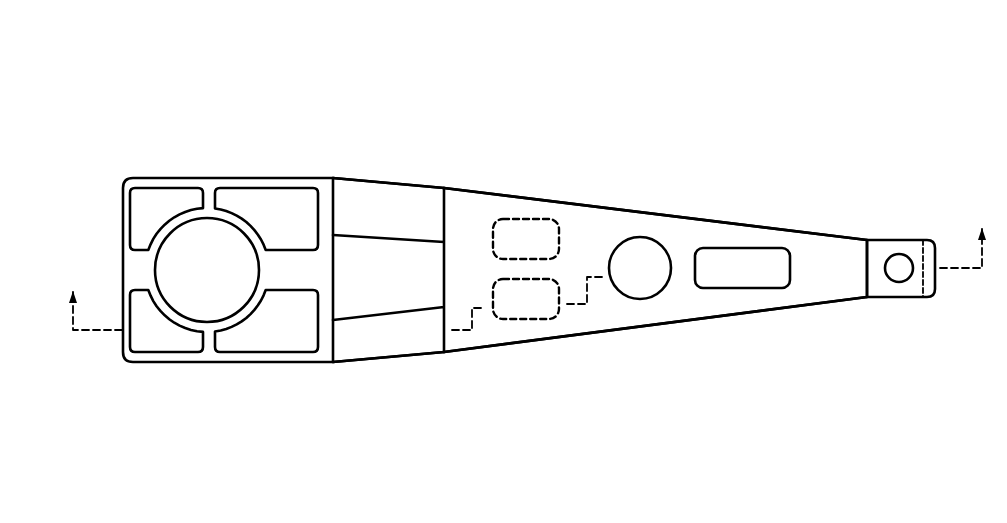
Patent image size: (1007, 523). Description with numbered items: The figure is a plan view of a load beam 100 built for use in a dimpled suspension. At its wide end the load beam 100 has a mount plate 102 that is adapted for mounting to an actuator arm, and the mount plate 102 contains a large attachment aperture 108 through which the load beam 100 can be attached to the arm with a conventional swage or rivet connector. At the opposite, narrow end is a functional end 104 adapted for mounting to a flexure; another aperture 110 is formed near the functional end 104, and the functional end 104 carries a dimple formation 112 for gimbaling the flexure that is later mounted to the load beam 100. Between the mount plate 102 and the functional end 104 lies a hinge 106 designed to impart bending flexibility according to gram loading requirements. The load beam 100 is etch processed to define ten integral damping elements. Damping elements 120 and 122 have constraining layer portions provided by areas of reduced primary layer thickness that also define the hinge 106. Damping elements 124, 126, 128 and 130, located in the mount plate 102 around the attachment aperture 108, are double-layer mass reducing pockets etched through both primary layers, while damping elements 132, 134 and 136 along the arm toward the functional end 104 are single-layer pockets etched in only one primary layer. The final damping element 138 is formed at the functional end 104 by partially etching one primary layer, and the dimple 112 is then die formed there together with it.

The load beam 100 is at (103, 72).
The mount plate 102 is at (210, 255).
The functional end 104 is at (717, 264).
The hinge 106 is at (375, 249).
The attachment aperture 108 is at (172, 237).
The aperture 110 is at (647, 286).
The dimple formation 112 is at (897, 272).
The integral damping element 120 is at (405, 190).
The integral damping element 122 is at (405, 350).
The integral damping element 124 is at (155, 196).
The integral damping element 126 is at (155, 345).
The integral damping element 128 is at (263, 190).
The integral damping element 130 is at (263, 347).
The integral damping element 132 is at (530, 232).
The integral damping element 134 is at (530, 312).
The integral damping element 136 is at (783, 270).
The integral damping element 138 is at (928, 271).